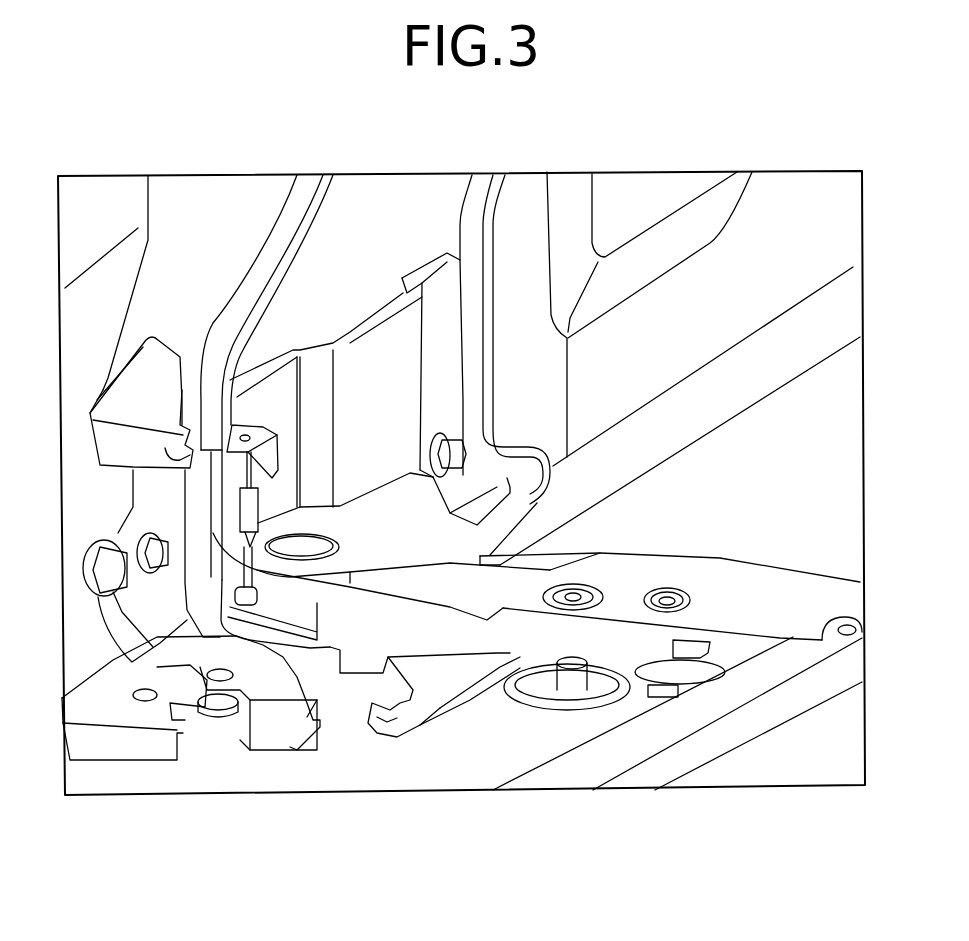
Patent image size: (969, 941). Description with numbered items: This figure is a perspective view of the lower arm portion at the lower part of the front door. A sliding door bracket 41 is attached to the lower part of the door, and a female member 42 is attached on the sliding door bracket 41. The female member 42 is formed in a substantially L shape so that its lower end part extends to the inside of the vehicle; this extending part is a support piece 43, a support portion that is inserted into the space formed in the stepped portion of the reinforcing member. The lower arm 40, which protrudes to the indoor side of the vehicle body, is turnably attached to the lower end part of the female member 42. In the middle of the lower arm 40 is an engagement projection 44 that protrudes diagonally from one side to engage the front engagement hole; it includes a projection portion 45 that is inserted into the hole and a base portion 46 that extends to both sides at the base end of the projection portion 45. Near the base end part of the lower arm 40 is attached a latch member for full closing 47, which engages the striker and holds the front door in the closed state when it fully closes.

The lower arm 40 is at (620, 637).
The sliding door bracket 41 is at (345, 225).
The female member 42 is at (405, 335).
The support piece 43 is at (378, 540).
The engagement projection 44 is at (455, 677).
The projection portion 45 is at (393, 717).
The base portion 46 is at (440, 707).
The latch member for full closing 47 is at (225, 718).